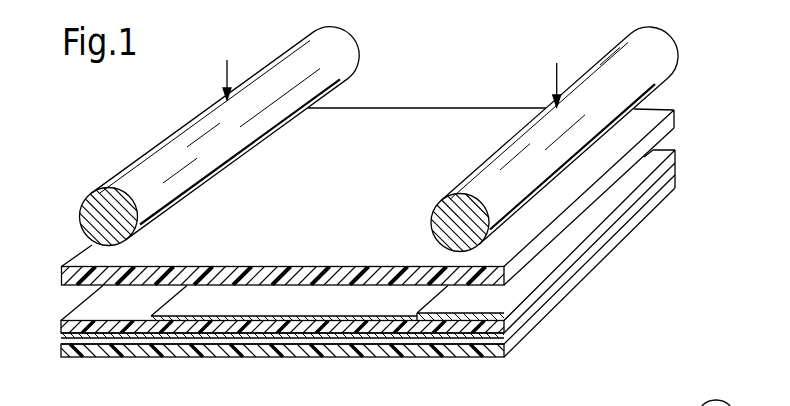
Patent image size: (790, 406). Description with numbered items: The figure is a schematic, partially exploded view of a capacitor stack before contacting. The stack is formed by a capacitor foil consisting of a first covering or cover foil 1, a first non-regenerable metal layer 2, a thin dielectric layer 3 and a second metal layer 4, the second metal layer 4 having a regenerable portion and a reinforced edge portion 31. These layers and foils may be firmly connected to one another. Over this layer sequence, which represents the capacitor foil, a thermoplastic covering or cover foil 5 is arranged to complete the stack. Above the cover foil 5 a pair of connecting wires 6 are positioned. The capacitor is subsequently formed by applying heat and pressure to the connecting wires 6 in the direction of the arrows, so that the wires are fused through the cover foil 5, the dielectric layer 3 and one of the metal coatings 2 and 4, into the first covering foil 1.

The first cover foil 1 is at (264, 350).
The first non-regenerable metal layer 2 is at (61, 338).
The thin dielectric layer 3 is at (61, 322).
The reinforced edge portion 31 is at (494, 314).
The second metal layer 4 is at (527, 320).
The thermoplastic cover foil 5 is at (62, 274).
The connecting wires 6 is at (320, 33).